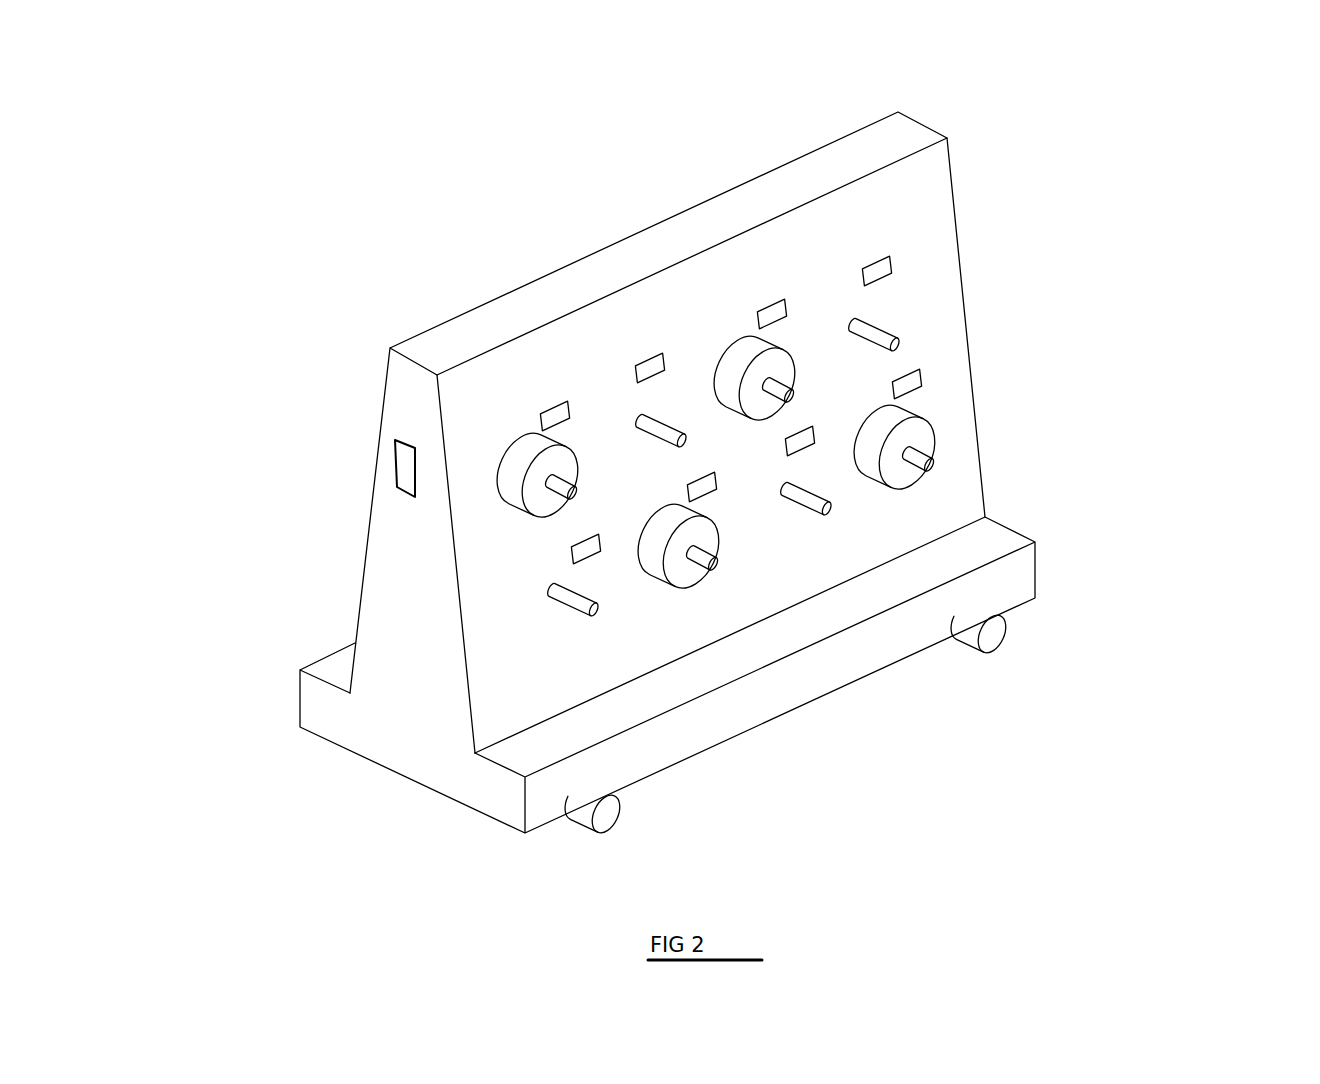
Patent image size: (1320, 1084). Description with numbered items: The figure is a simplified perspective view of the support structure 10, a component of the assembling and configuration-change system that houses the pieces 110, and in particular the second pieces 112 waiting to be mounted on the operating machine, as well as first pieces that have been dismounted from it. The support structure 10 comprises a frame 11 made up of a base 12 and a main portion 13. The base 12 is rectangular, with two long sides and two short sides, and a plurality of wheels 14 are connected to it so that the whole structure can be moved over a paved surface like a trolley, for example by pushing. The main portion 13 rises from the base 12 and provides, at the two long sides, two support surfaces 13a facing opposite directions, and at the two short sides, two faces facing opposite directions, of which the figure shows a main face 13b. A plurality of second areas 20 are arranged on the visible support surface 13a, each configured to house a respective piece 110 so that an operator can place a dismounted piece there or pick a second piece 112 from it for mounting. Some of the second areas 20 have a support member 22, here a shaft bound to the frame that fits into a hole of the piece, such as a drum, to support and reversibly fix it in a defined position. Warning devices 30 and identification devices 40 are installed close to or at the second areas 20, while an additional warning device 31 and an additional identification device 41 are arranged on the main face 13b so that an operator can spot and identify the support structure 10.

The support structure 10 is at (412, 276).
The frame 11 is at (913, 133).
The base 12 is at (730, 703).
The main portion 13 is at (975, 410).
The support surface 13a is at (880, 202).
The main face 13b is at (763, 172).
The wheel 14 is at (1000, 633).
The second area 20 is at (539, 390).
The support member 22 is at (560, 483).
The warning device 30 is at (675, 364).
The identification device 40 is at (567, 403).
The additional warning device 31 is at (261, 444).
The additional identification device 41 is at (396, 460).
The piece 110 is at (548, 329).
The second piece 112 is at (520, 460).